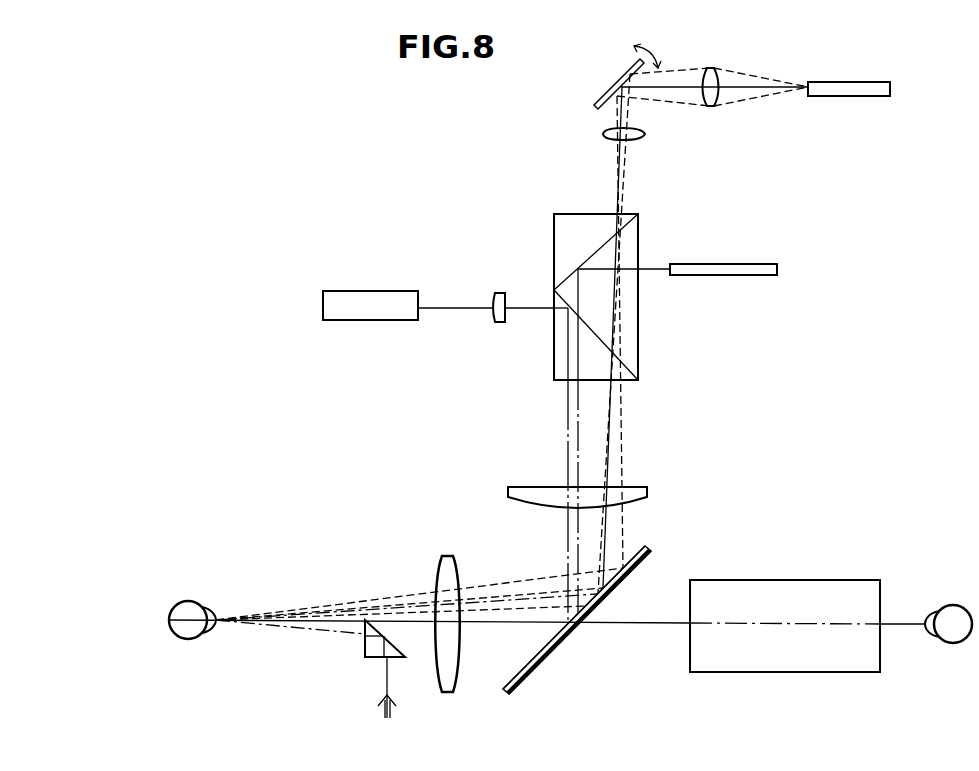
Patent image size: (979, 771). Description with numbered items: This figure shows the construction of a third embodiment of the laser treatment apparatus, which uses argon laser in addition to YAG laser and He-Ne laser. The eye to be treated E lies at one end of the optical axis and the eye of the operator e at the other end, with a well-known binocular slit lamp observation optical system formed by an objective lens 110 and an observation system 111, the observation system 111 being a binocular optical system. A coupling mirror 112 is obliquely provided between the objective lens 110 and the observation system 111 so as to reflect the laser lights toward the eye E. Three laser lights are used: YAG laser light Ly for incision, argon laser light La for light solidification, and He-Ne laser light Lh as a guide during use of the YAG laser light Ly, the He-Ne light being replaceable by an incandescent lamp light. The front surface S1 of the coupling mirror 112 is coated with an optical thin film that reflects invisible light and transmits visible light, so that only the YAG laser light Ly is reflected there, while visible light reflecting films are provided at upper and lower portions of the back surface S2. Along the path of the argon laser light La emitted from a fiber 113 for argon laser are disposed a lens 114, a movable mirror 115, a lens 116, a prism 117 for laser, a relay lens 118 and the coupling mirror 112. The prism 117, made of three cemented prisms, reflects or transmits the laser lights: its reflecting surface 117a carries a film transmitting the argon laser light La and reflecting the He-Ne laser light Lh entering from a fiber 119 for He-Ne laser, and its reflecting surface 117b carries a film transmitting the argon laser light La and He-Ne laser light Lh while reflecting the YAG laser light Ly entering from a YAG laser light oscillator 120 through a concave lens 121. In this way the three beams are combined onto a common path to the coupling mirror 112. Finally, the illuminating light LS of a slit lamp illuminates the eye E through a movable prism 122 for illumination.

The objective lens 110 is at (447, 557).
The observation system 111 is at (818, 586).
The coupling mirror 112 is at (553, 645).
The fiber for argon laser 113 is at (874, 96).
The lens 114 is at (713, 106).
The movable mirror 115 is at (615, 86).
The lens 116 is at (604, 131).
The prism for laser 117 is at (632, 354).
The reflecting surface 117a is at (574, 272).
The reflecting surface 117b is at (597, 337).
The relay lens 118 is at (649, 488).
The fiber for He-Ne laser 119 is at (764, 271).
The YAG laser light oscillator 120 is at (358, 313).
The concave lens 121 is at (497, 320).
The movable prism for illumination 122 is at (363, 645).
The eye to be treated E is at (197, 603).
The eye of the operator e is at (950, 607).
The argon laser light La is at (764, 81).
The He-Ne laser light Lh is at (660, 266).
The YAG laser light Ly is at (451, 306).
The illuminating light of slit lamp LS is at (395, 712).
The front surface S1 is at (521, 657).
The back surface S2 is at (519, 686).